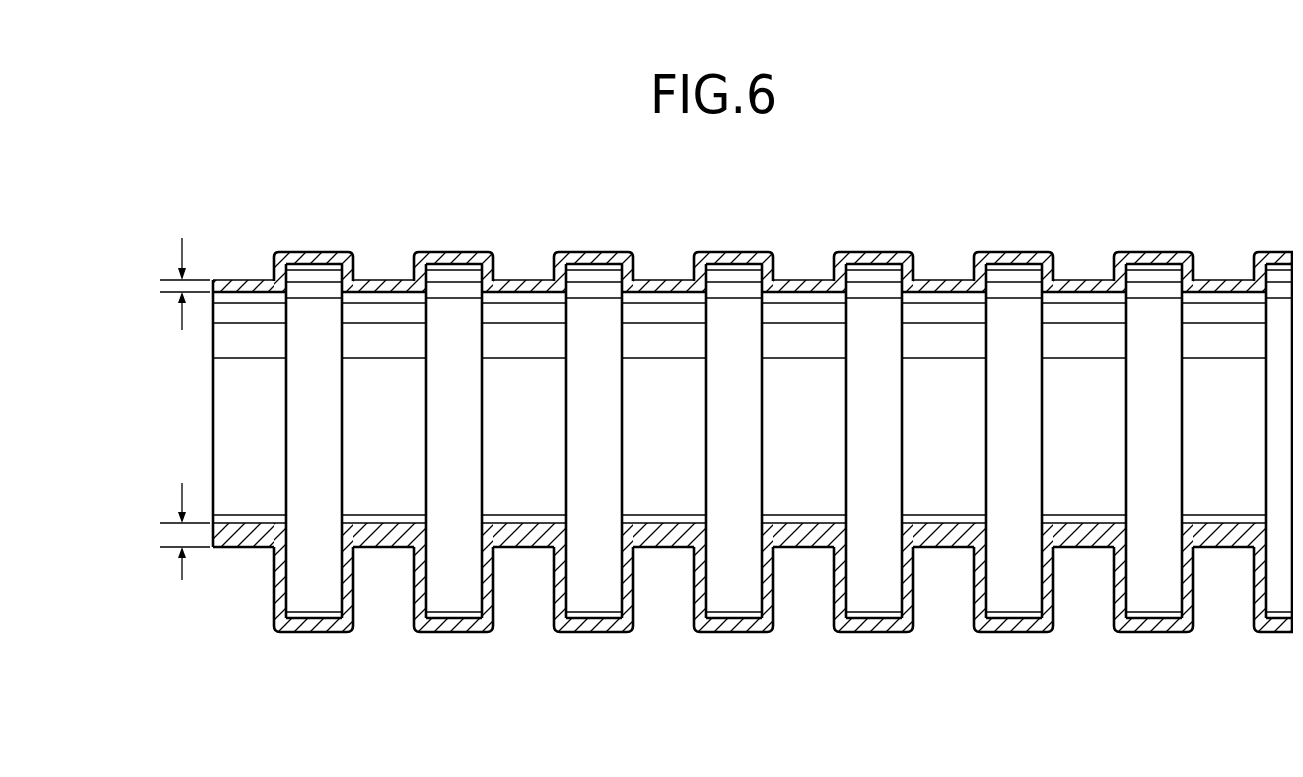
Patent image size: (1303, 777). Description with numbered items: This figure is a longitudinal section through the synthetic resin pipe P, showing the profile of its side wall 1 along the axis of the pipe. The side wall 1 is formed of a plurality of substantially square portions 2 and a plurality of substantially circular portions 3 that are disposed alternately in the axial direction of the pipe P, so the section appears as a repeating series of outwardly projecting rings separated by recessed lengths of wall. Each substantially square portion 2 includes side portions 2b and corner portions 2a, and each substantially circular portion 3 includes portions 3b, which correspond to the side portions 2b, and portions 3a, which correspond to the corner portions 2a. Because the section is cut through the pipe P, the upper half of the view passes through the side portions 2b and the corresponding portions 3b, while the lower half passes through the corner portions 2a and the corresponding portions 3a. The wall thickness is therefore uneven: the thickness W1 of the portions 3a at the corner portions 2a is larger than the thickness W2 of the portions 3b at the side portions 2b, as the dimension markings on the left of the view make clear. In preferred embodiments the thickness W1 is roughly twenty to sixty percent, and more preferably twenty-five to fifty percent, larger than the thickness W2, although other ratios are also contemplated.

The side wall 1 is at (1003, 254).
The substantially square portions 2 is at (867, 258).
The corner portions 2a is at (717, 633).
The side portions 2b is at (717, 252).
The substantially circular portions 3 is at (803, 281).
The portions of the circular portions corresponding to the corner portions 3a is at (528, 548).
The portions of the circular portions corresponding to the side portions 3b is at (516, 279).
The synthetic resin pipe P is at (1197, 198).
The thickness of portions 3a W1 is at (160, 540).
The thickness of portions 3b W2 is at (160, 287).